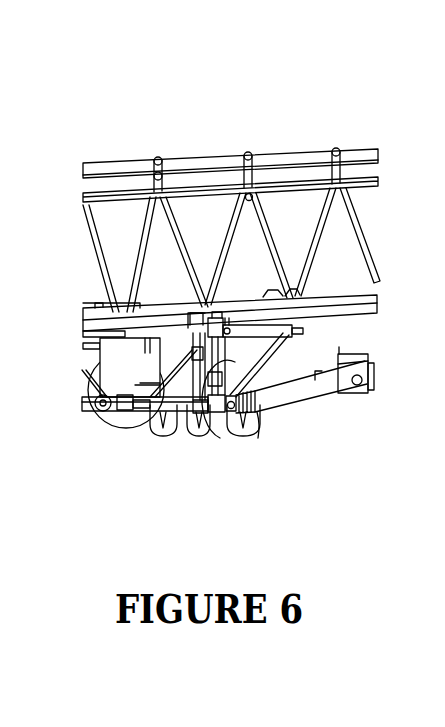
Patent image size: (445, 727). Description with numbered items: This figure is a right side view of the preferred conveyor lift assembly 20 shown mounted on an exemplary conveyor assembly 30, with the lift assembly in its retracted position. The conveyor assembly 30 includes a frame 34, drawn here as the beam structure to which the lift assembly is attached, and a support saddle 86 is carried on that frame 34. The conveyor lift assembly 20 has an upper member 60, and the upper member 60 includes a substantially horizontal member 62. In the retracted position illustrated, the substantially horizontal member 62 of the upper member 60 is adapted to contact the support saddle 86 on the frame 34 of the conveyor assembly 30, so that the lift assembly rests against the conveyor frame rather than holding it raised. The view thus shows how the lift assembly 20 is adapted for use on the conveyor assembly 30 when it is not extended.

The conveyor lift assembly 20 is at (178, 387).
The conveyor assembly 30 is at (268, 143).
The frame 34 is at (356, 317).
The upper member 60 is at (143, 351).
The substantially horizontal member 62 is at (193, 312).
The support saddle 86 is at (208, 318).